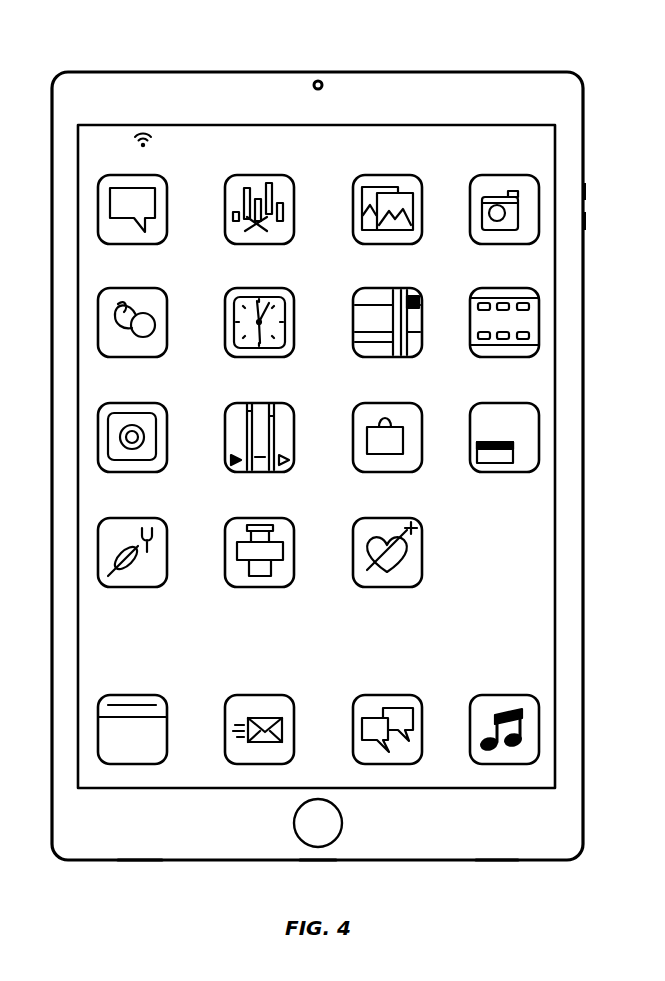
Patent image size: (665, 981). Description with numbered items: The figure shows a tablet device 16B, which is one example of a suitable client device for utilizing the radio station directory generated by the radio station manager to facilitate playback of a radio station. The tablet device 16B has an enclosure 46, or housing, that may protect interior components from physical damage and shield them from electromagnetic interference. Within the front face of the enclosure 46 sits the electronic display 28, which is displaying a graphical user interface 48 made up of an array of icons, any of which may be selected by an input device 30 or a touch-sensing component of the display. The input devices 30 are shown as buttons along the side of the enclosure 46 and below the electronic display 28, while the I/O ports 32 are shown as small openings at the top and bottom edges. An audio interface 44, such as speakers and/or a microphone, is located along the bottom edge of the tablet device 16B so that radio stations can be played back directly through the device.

The tablet device 16B is at (322, 459).
The electronic display 28 is at (557, 523).
The input devices 30 is at (586, 196).
The input/output (I/O) ports 32 is at (318, 71).
The audio interface 44 is at (140, 862).
The enclosure 46 is at (584, 472).
The graphical user interface (GUI) 48 is at (541, 377).